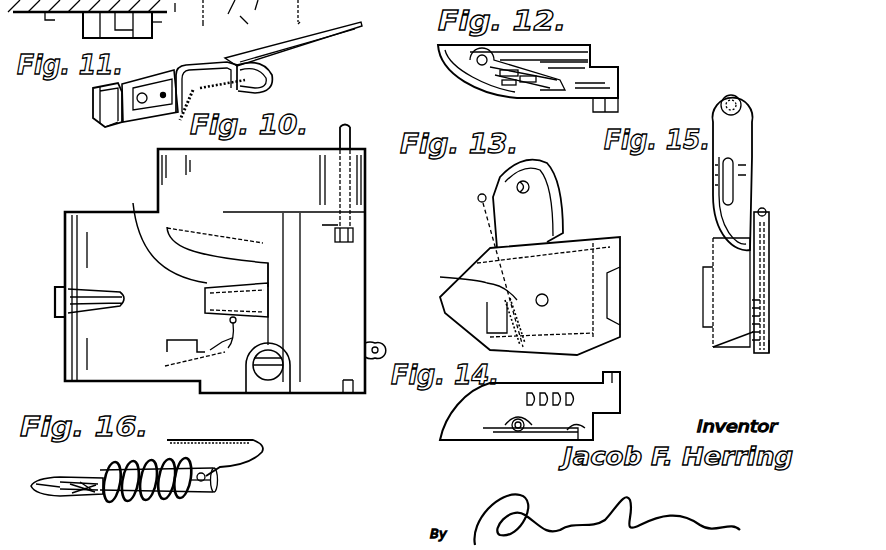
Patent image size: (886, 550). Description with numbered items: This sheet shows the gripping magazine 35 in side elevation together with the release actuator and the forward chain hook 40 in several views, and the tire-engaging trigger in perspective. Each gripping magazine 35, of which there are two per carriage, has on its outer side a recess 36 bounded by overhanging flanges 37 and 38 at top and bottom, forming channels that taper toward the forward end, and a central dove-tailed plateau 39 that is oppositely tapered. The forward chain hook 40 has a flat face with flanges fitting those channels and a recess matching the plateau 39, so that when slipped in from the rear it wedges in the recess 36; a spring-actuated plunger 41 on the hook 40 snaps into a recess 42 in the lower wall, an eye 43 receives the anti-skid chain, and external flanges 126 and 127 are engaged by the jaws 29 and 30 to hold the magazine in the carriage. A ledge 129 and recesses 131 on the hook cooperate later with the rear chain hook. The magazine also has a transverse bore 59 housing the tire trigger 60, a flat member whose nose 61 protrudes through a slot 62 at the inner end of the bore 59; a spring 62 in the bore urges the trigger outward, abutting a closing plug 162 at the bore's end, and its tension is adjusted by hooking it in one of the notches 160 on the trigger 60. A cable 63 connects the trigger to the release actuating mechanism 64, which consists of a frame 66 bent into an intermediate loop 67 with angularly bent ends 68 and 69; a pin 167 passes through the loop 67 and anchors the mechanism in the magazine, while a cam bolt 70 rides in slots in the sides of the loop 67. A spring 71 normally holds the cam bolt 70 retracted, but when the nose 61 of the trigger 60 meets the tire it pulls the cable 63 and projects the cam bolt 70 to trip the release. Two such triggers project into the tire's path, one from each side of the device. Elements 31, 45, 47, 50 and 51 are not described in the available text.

In FIG. 11, the jaw 29 is at (199, 31).
In FIG. 11, the jaw 30 is at (295, 27).
In FIG. 11, the pin 31 is at (262, 12).
In FIG. 10, the gripping magazine 35 is at (368, 197).
In FIG. 10, the recess 36 is at (133, 203).
In FIG. 10, the overhanging flange 37 is at (205, 283).
In FIG. 10, the overhanging flange 38 is at (220, 340).
In FIG. 10, the dove-tailed plateau 39 is at (205, 298).
In FIG. 12, the forward chain hook 40 is at (456, 80).
In FIG. 13, the forward chain hook 40 is at (530, 257).
In FIG. 13, the spring-actuated plunger 41 is at (545, 320).
In FIG. 14, the spring-actuated plunger 41 is at (518, 437).
In FIG. 15, the spring-actuated plunger 41 is at (755, 340).
In FIG. 10, the recess 42 is at (167, 348).
In FIG. 12, the eye 43 is at (490, 100).
In FIG. 13, the eye 43 is at (517, 187).
In FIG. 11, the base 45 is at (49, 23).
In FIG. 10, the casing 47 is at (72, 254).
In FIG. 11, the bracket 50 is at (186, 6).
In FIG. 11, the post 51 is at (166, 25).
In FIG. 11, the bore 59 is at (250, 28).
In FIG. 10, the bore 59 is at (283, 380).
In FIG. 11, the tire trigger 60 is at (287, 11).
In FIG. 16, the tire trigger 60 is at (75, 495).
In FIG. 16, the nose 61 is at (52, 479).
In FIG. 11, the slot 62 is at (225, 8).
In FIG. 11, the cable 63 is at (178, 120).
In FIG. 16, the cable 63 is at (228, 441).
In FIG. 11, the release actuating mechanism 64 is at (256, 92).
In FIG. 11, the frame 66 is at (108, 127).
In FIG. 11, the intermediate loop 67 is at (180, 63).
In FIG. 11, the angularly bent end 68 is at (93, 104).
In FIG. 11, the angularly bent end 69 is at (273, 66).
In FIG. 11, the cam bolt 70 is at (320, 45).
In FIG. 11, the spring 71 is at (122, 86).
In FIG. 12, the flange 126 is at (590, 100).
In FIG. 15, the flange 126 is at (713, 246).
In FIG. 14, the flange 127 is at (490, 398).
In FIG. 15, the flange 127 is at (713, 347).
In FIG. 13, the ledge 129 is at (440, 277).
In FIG. 14, the recess 131 is at (578, 392).
In FIG. 16, the notch 160 is at (90, 494).
In FIG. 10, the closing plug 162 is at (245, 380).
In FIG. 10, the pin 167 is at (215, 362).